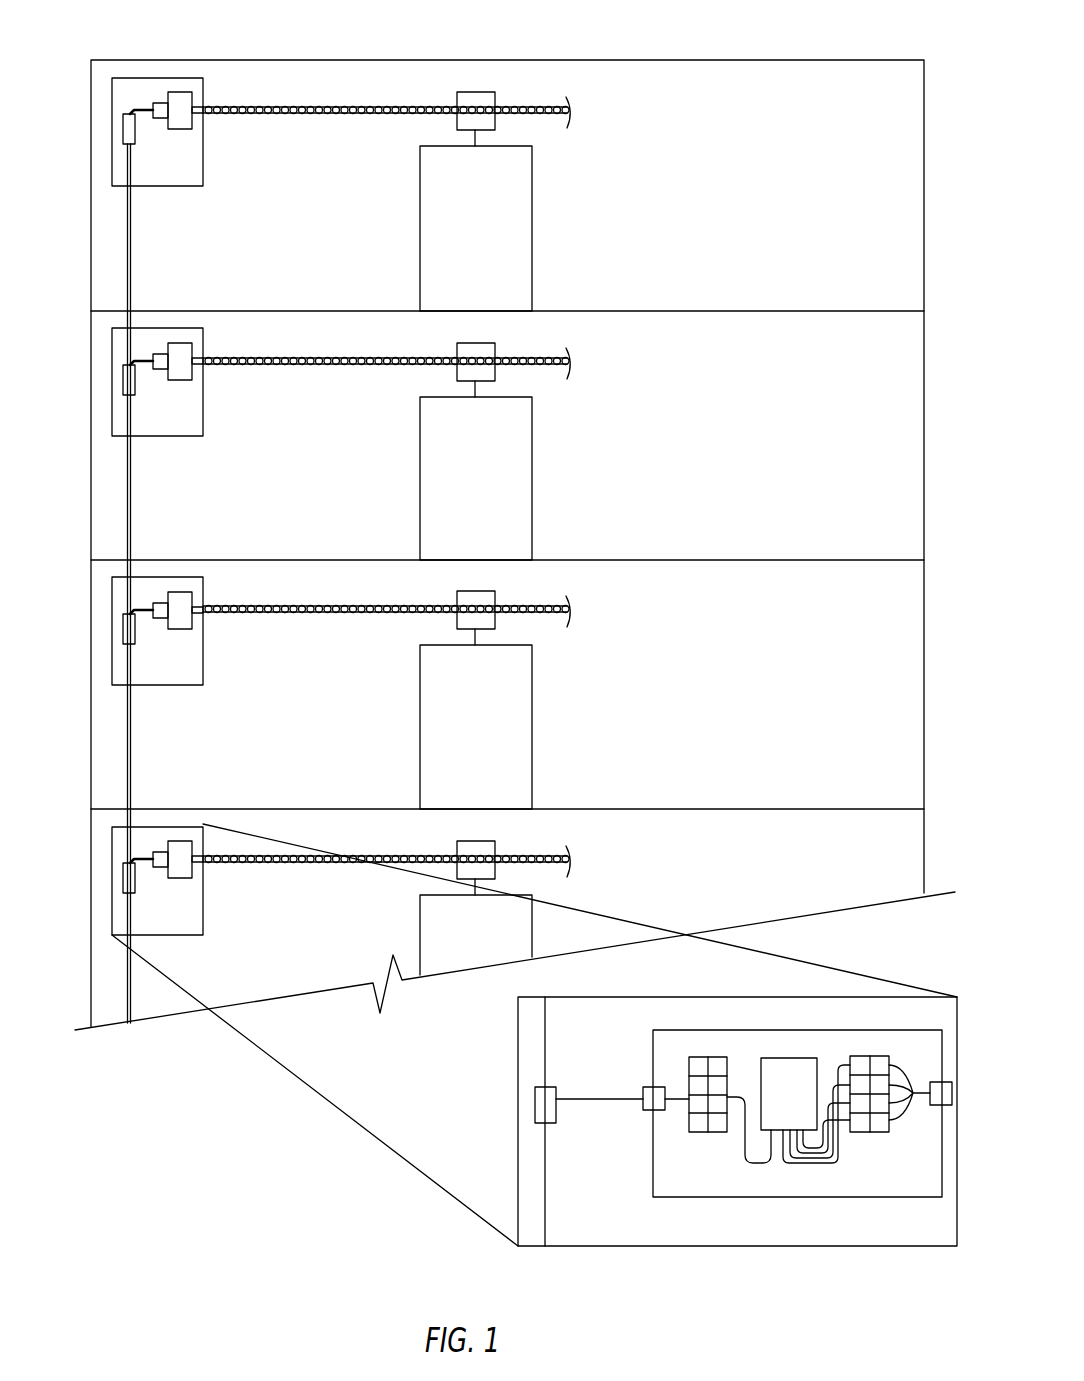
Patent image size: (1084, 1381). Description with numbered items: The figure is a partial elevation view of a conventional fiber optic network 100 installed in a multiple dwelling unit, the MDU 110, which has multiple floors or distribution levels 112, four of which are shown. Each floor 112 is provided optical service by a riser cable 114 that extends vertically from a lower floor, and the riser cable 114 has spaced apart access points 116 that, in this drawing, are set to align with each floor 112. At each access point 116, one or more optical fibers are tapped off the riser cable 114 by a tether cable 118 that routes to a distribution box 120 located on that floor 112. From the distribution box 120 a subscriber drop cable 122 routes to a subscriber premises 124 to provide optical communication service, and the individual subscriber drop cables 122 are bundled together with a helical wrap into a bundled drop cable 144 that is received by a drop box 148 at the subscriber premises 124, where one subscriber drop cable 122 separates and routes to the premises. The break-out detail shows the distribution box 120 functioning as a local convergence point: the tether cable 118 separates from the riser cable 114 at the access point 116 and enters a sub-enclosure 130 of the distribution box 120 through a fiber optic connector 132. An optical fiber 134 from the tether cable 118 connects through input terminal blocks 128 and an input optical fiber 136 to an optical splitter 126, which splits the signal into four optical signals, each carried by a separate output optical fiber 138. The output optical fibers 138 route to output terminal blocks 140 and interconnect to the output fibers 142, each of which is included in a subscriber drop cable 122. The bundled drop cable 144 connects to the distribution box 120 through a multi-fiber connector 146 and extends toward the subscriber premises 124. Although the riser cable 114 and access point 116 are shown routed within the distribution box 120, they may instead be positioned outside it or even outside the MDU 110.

The fiber optic network 100 is at (52, 28).
The MDU 110 is at (203, 60).
The floor 112 is at (112, 262).
The riser cable 114 is at (128, 218).
The access point 116 is at (124, 115).
The tether cable 118 is at (147, 109).
The distribution box 120 is at (118, 163).
The subscriber drop cable 122 is at (474, 118).
The subscriber premises 124 is at (532, 212).
The optical splitter 126 is at (797, 1058).
The input terminal blocks 128 is at (700, 1057).
The sub-enclosure 130 is at (843, 1030).
The fiber optic connector 132 is at (655, 1110).
The optical fiber 134 is at (680, 1095).
The input optical fiber 136 is at (758, 1165).
The output optical fiber 138 is at (827, 1165).
The output terminal blocks 140 is at (877, 1056).
The output fiber 142 is at (899, 1119).
The bundled drop cable 144 is at (290, 108).
The multi-fiber connector 146 is at (930, 1082).
The drop box 148 is at (480, 90).